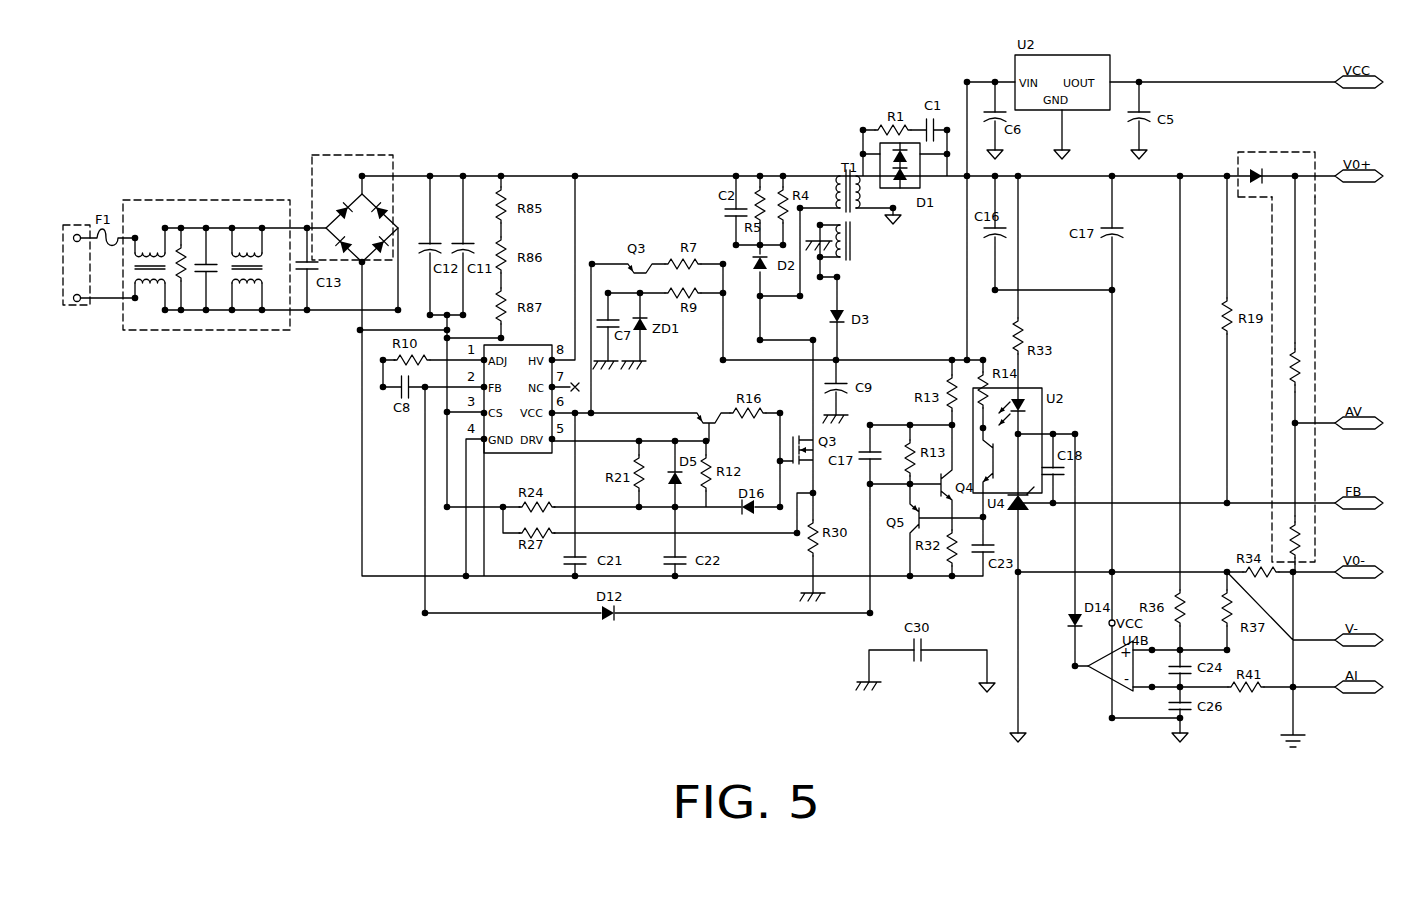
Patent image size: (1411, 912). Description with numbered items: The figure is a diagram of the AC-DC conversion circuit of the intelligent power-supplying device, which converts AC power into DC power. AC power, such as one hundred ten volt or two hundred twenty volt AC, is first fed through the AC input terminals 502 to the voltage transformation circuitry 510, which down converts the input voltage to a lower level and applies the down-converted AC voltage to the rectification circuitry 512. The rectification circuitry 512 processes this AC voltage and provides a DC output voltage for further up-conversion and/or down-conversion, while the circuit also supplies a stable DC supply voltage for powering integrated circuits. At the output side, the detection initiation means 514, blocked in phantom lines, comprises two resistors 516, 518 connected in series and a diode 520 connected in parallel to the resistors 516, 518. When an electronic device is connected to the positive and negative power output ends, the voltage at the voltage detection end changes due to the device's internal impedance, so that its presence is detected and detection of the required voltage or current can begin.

The AC input terminals 502 is at (78, 306).
The voltage transformation circuitry 510 is at (206, 200).
The rectification circuitry 512 is at (355, 153).
The detection initiation means 514 is at (1316, 262).
The resistor 516 is at (1297, 363).
The resistor 518 is at (1297, 540).
The diode 520 is at (1268, 166).